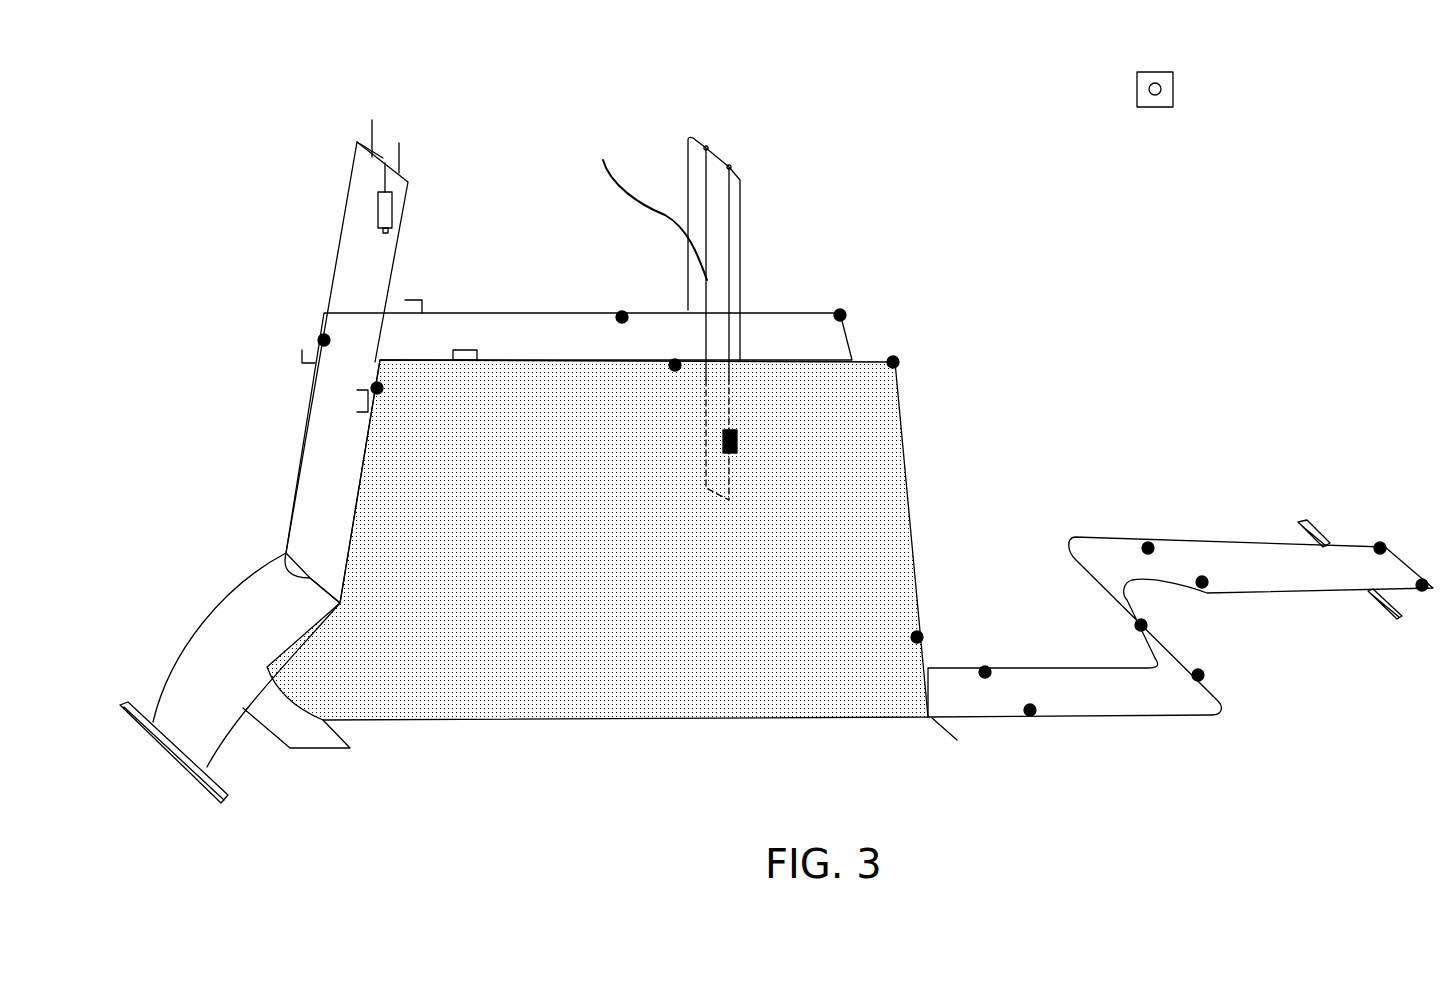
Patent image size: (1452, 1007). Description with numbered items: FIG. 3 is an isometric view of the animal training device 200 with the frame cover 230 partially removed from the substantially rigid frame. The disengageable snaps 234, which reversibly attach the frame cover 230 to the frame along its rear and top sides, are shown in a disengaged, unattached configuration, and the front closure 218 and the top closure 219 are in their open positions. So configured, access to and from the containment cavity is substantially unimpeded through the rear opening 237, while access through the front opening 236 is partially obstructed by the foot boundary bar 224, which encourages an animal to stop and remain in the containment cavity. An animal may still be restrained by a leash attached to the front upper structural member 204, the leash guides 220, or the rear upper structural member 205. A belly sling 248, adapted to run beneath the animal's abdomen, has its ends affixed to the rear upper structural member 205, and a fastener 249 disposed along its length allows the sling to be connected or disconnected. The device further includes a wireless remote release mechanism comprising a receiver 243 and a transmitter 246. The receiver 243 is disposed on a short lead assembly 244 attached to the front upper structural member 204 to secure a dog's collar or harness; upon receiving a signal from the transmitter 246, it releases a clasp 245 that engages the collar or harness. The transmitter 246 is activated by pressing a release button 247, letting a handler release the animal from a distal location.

The animal training device 200 is at (557, 90).
The front upper structural member 204 is at (343, 207).
The rear upper structural member 205 is at (742, 243).
The front closure 218 is at (237, 797).
The top closure 219 is at (1393, 617).
The leash guides 220 is at (400, 163).
The foot boundary bar 224 is at (286, 553).
The frame cover 230 is at (200, 727).
The disengageable snaps 234 is at (377, 388).
The front opening 236 is at (315, 440).
The rear opening 237 is at (940, 488).
The receiver 243 is at (395, 203).
The short lead assembly 244 is at (357, 157).
The clasp 245 is at (385, 231).
The transmitter 246 is at (1173, 80).
The release button 247 is at (1152, 95).
The belly sling 248 is at (646, 204).
The fastener 249 is at (737, 440).